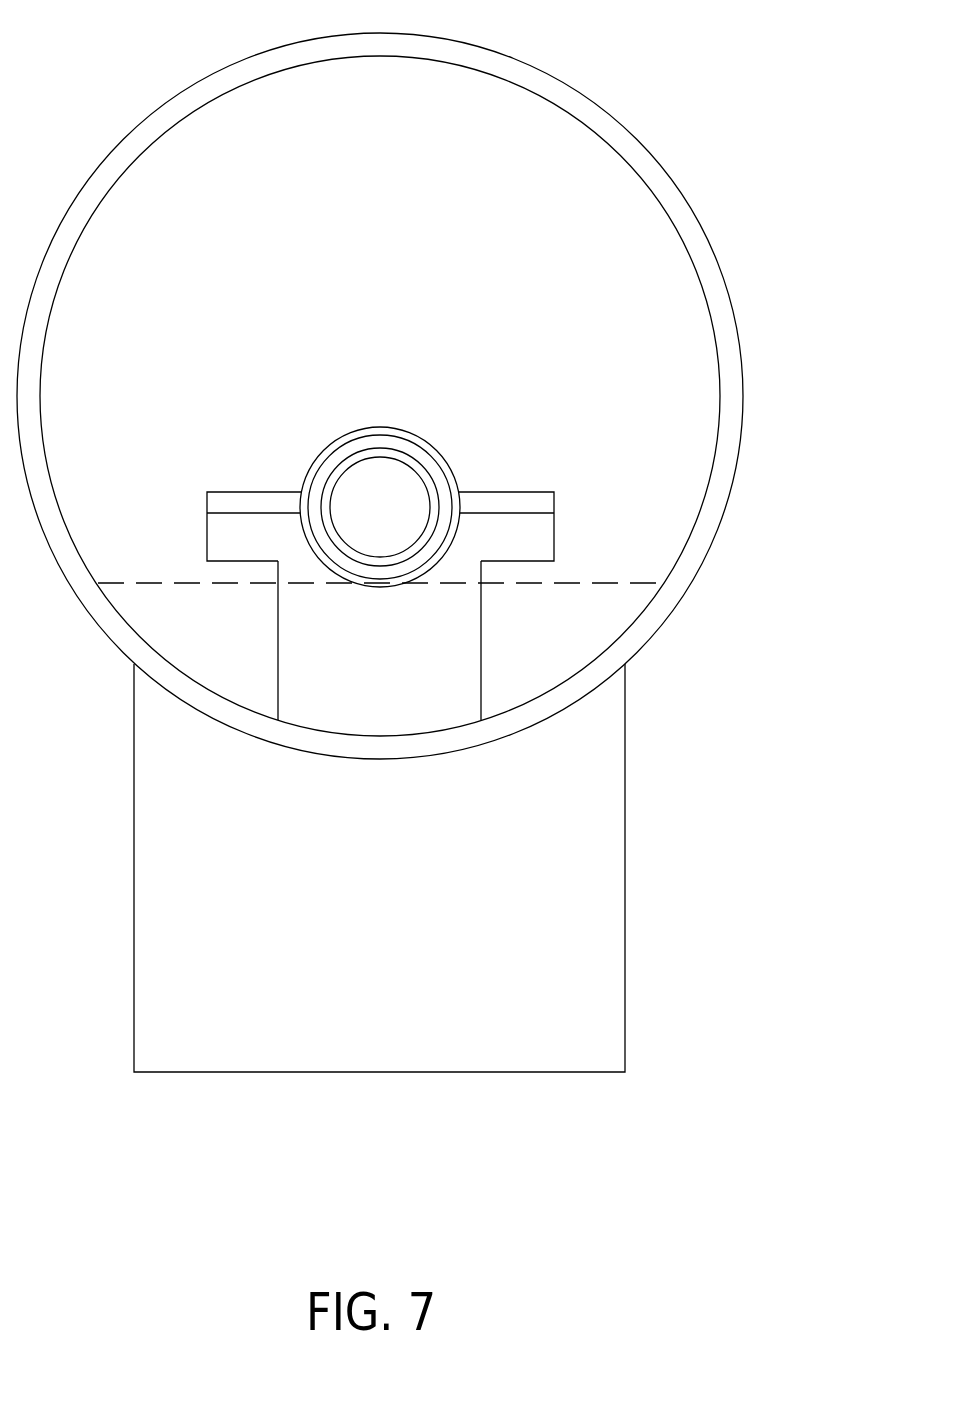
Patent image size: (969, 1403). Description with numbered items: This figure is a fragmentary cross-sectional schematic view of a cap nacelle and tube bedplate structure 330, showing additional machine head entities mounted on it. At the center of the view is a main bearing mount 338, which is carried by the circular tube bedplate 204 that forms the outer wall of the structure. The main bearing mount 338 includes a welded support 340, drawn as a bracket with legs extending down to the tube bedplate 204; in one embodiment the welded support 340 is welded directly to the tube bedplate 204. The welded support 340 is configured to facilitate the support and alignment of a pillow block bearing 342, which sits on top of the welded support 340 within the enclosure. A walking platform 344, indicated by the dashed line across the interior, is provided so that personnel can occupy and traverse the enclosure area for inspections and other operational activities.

The cap nacelle and tube bedplate structure 330 is at (439, 536).
The main bearing mount 338 is at (381, 501).
The tube bedplate 204 is at (737, 460).
The pillow block bearing 342 is at (508, 492).
The walking platform 344 is at (98, 577).
The welded support 340 is at (483, 717).